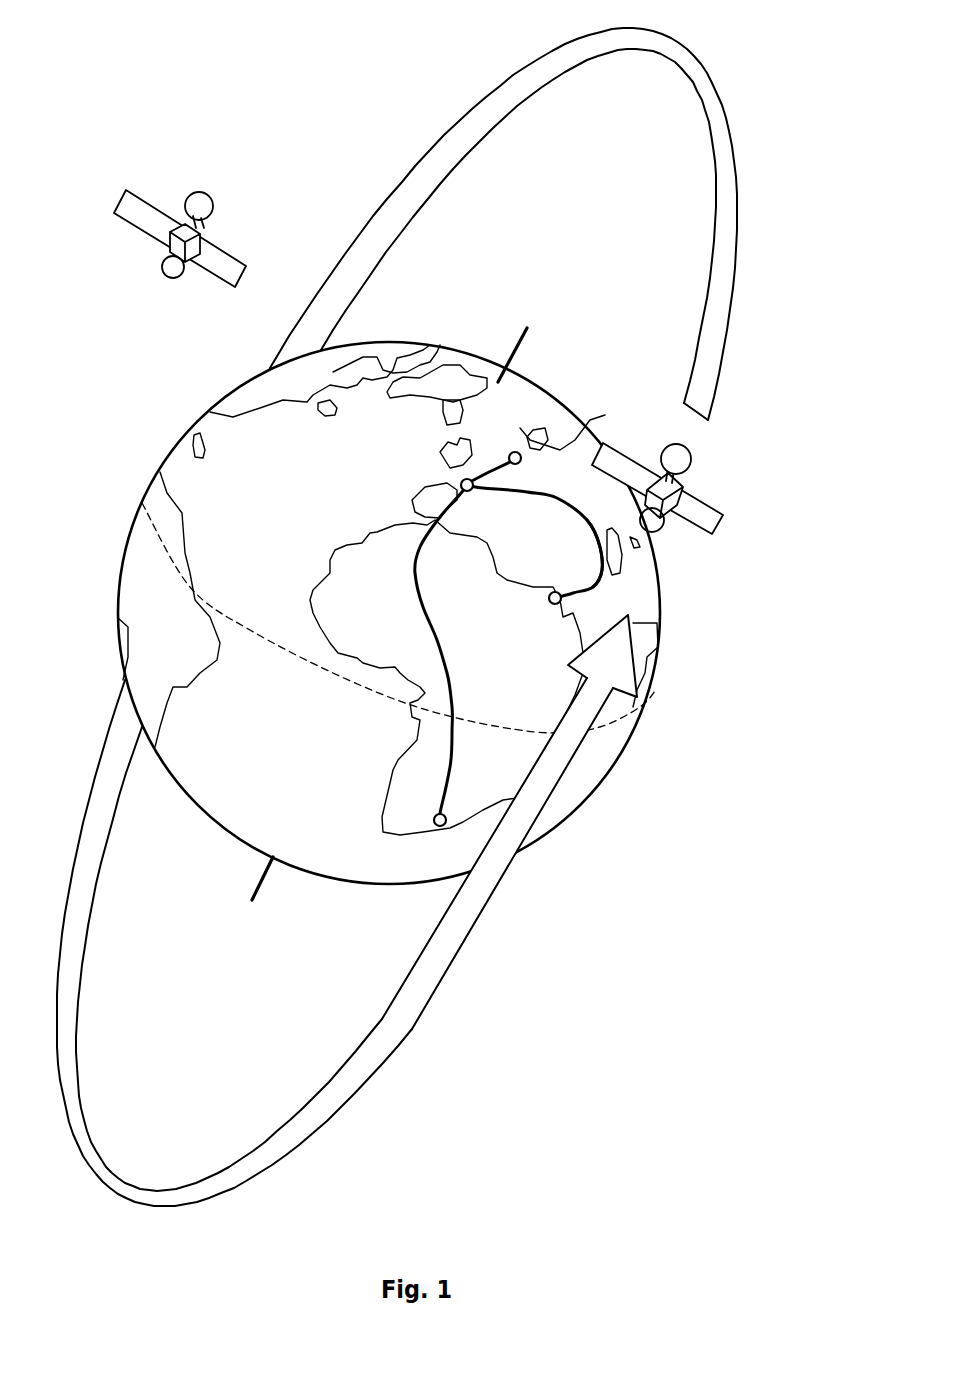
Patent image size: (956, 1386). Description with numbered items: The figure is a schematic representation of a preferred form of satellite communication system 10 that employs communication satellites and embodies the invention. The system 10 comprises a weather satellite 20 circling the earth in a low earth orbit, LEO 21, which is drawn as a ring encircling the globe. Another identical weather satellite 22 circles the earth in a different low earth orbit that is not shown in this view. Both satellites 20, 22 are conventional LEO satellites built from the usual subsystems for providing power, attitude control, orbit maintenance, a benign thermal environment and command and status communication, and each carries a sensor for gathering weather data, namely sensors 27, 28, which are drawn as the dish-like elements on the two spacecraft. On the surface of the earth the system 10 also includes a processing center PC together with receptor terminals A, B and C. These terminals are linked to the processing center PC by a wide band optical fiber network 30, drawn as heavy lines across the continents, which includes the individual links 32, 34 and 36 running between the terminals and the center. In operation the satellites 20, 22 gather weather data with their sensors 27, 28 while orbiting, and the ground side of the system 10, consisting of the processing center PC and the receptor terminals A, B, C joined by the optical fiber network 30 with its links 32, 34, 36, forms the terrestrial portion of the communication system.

The satellite communication system 10 is at (551, 961).
The weather satellite 20 is at (717, 527).
The LEO 21 is at (703, 298).
The weather satellite 22 is at (132, 228).
The sensor 27 is at (217, 199).
The sensor 28 is at (691, 455).
The wide band optical fiber network 30 is at (403, 618).
The link 32 is at (448, 682).
The link 34 is at (510, 480).
The link 36 is at (602, 583).
The processing center PC is at (462, 483).
The receptor terminal A is at (515, 450).
The receptor terminal B is at (550, 603).
The receptor terminal C is at (450, 810).